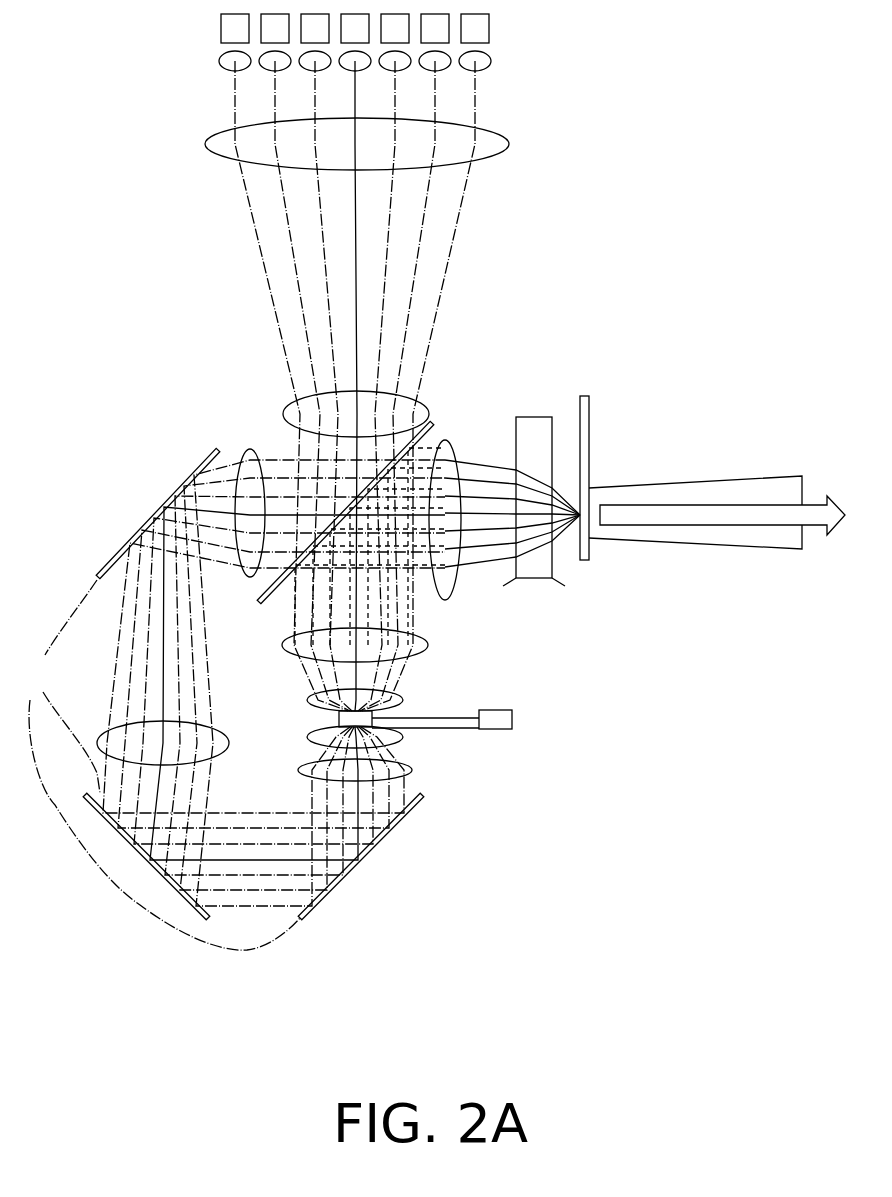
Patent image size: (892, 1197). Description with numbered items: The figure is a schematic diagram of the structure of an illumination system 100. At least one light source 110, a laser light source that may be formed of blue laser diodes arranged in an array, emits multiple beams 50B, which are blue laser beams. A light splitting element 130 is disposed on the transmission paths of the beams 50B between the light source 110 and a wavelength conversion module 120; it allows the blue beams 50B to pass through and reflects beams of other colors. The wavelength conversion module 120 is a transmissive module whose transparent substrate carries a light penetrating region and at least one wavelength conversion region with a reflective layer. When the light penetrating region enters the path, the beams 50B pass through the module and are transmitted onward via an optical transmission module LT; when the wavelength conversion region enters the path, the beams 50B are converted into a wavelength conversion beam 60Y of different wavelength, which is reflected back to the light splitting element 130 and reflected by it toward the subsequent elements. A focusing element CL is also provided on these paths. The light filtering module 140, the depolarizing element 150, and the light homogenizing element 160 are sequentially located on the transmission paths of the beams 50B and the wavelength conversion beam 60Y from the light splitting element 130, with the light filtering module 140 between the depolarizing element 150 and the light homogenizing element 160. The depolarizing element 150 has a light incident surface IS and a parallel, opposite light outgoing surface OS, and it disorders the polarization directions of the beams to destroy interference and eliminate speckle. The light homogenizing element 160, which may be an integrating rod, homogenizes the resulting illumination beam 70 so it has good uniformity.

The light source 110 is at (190, 65).
The beams 50B is at (444, 275).
The optical transmission module LT is at (163, 765).
The light splitting element 130 is at (432, 423).
The focusing element CL is at (452, 448).
The depolarizing element 150 is at (535, 425).
The light incident surface IS is at (513, 588).
The light outgoing surface OS is at (555, 588).
The light filtering module 140 is at (588, 553).
The light homogenizing element 160 is at (700, 488).
The illumination beam 70 is at (817, 518).
The wavelength conversion beam 60Y is at (407, 610).
The wavelength conversion module 120 is at (458, 723).
The illumination system 100 is at (777, 954).